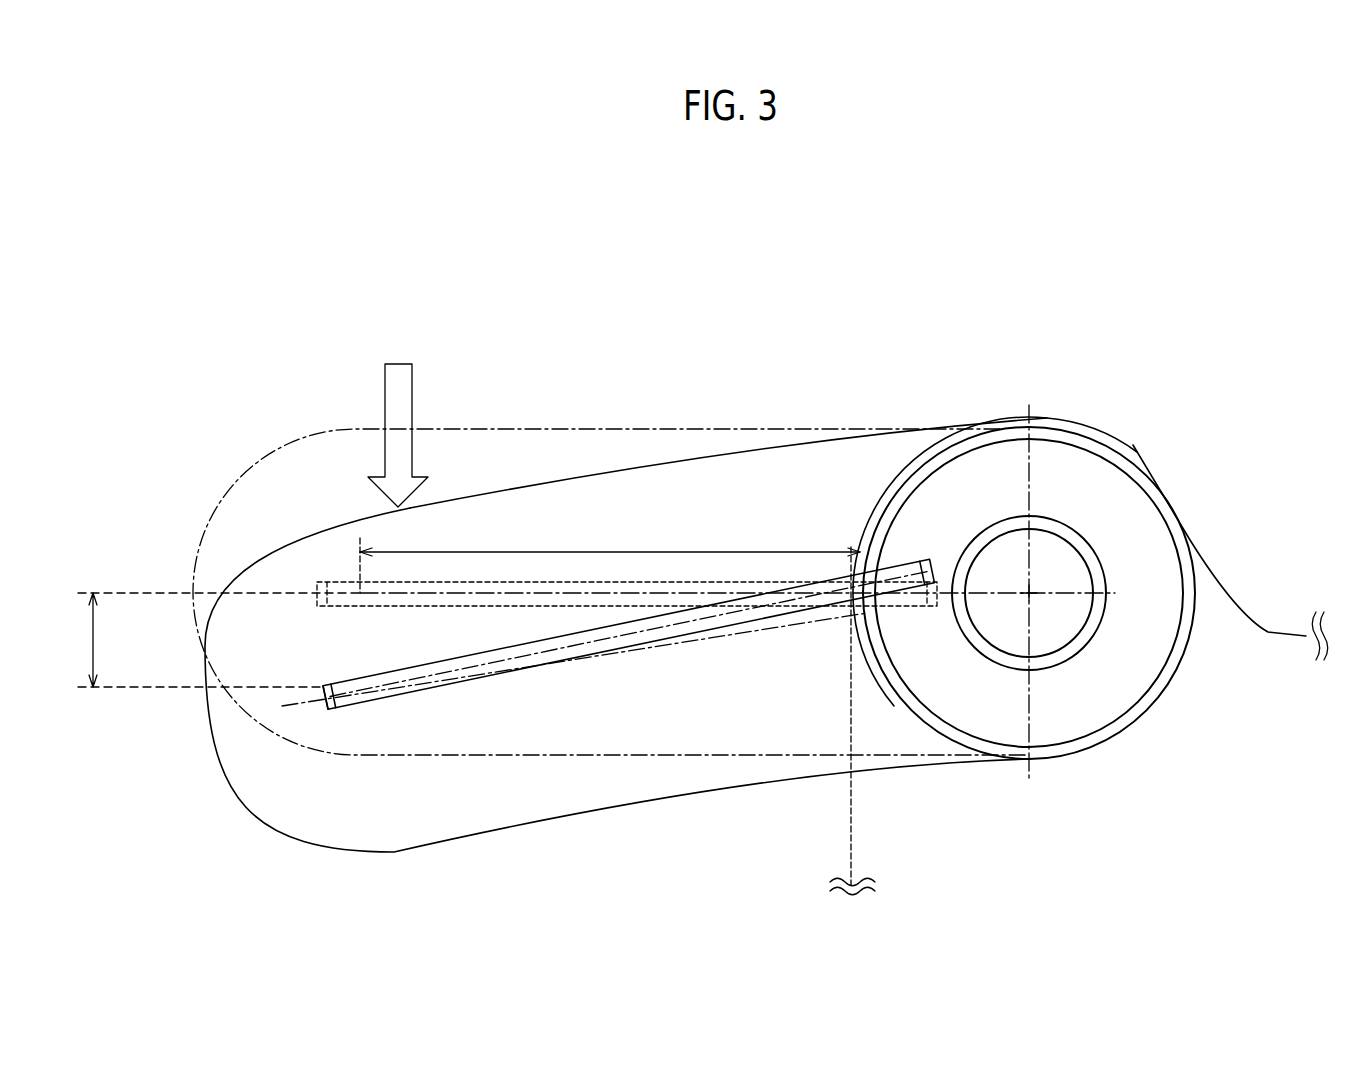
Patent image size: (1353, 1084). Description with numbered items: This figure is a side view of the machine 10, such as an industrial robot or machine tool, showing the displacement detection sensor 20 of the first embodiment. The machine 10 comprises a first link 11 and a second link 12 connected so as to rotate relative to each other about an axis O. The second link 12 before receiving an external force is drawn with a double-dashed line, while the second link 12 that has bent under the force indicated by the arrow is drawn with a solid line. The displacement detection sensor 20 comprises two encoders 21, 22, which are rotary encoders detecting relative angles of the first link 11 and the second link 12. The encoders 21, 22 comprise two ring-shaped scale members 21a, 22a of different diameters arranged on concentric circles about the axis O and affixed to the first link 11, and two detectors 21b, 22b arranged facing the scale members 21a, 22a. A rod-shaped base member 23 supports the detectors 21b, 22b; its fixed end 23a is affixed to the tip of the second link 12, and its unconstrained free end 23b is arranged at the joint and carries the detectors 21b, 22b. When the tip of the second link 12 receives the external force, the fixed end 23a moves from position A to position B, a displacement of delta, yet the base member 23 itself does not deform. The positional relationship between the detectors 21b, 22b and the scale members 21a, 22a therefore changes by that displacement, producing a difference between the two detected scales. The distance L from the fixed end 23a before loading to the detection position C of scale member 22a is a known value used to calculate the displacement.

The machine 10 is at (627, 328).
The first link 11 is at (1223, 627).
The second link 12 is at (765, 458).
The displacement detection sensor 20 is at (803, 474).
The encoder 21 is at (1099, 465).
The scale member 21a is at (1077, 547).
The detector 21b is at (1033, 443).
The encoder 22 is at (1014, 510).
The scale member 22a is at (1003, 427).
The detector 22b is at (868, 632).
The base member 23 is at (648, 617).
The fixed end 23a is at (385, 687).
The free end 23b is at (890, 590).
The position A is at (360, 592).
The position B is at (373, 687).
The detection position C is at (857, 602).
The axis O is at (1033, 596).